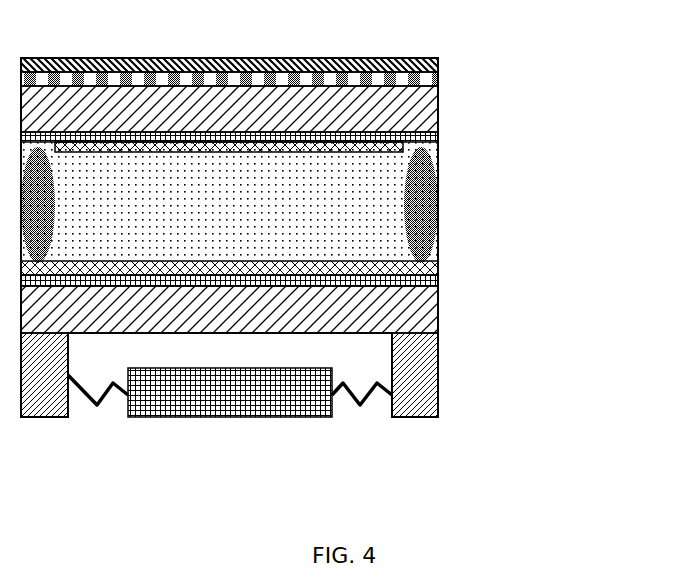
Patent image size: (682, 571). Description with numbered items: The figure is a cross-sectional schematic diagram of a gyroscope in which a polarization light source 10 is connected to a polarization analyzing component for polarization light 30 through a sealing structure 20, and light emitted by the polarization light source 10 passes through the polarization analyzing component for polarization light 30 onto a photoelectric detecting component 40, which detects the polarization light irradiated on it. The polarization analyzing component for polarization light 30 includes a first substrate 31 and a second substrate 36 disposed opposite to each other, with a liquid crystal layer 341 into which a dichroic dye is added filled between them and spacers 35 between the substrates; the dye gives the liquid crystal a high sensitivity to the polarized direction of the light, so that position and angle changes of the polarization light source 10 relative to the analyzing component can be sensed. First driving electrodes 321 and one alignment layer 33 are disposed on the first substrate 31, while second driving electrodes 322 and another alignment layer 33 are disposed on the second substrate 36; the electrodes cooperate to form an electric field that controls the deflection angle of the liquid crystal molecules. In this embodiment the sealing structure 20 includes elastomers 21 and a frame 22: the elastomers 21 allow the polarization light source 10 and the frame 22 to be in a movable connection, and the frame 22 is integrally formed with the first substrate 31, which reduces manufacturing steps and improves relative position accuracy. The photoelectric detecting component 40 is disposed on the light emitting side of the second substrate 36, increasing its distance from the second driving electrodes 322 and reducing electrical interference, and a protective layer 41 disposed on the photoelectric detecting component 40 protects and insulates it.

The polarization light source 10 is at (230, 417).
The sealing structure 20 is at (583, 398).
The elastomers 21 is at (374, 383).
The frame 22 is at (438, 375).
The polarization analyzing component for polarization light 30 is at (577, 95).
The first substrate 31 is at (438, 317).
The first driving electrodes 321 is at (438, 280).
The second driving electrodes 322 is at (438, 135).
The alignment layers 33 is at (438, 147).
The liquid crystal layer into which a dichroic dye is added 341 is at (228, 203).
The spacers 35 is at (418, 204).
The second substrate 36 is at (438, 100).
The photoelectric detecting component 40 is at (438, 78).
The protective layer 41 is at (232, 58).